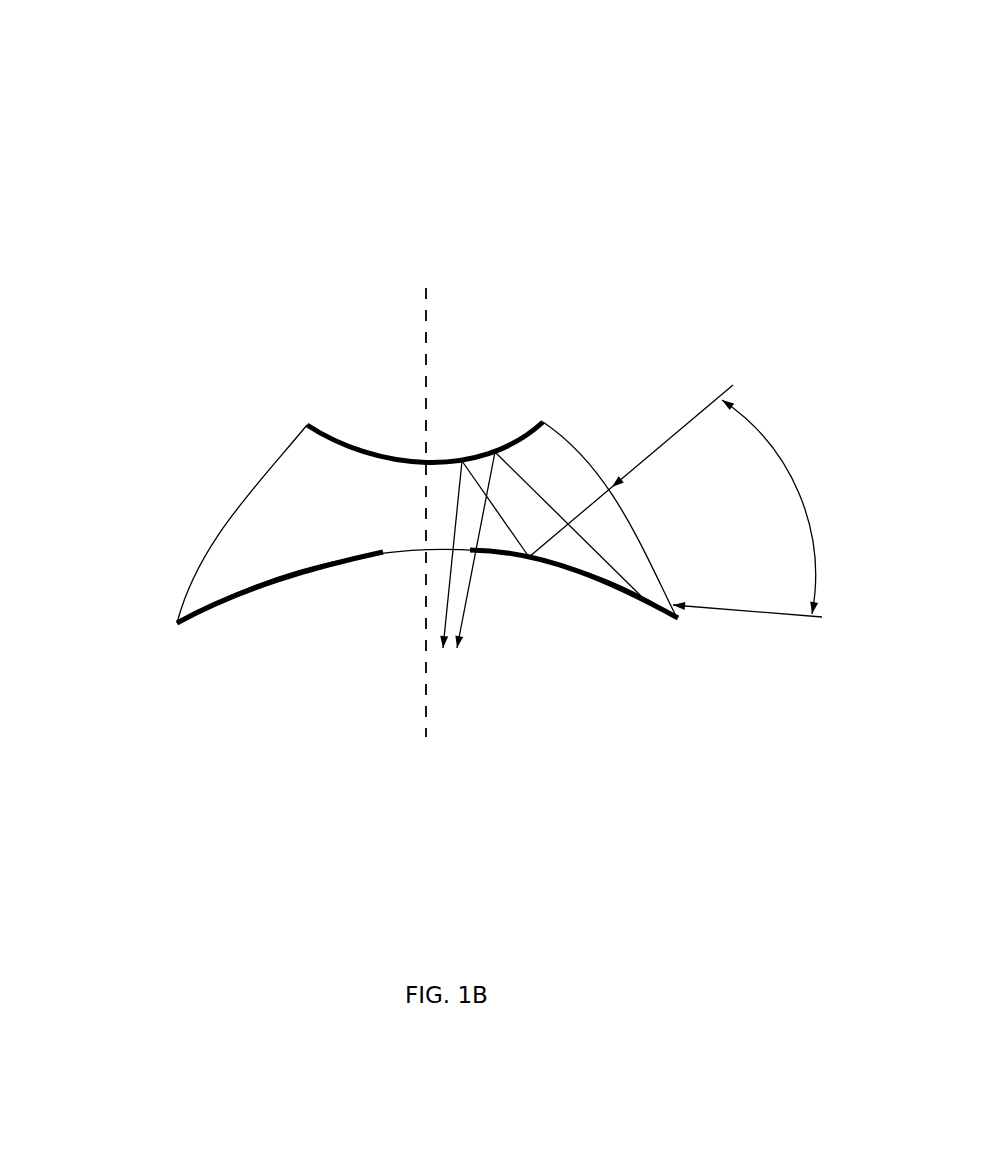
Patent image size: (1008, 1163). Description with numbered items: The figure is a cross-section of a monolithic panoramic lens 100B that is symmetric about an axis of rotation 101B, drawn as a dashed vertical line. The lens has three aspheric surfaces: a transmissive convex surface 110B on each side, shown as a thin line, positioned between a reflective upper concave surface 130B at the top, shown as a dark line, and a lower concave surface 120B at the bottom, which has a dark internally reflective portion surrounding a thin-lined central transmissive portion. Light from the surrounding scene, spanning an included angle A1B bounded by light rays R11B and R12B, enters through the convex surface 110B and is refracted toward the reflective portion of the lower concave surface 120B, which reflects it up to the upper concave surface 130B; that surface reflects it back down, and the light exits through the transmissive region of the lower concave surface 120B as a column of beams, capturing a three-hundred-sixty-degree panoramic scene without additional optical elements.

The panoramic lens 100B is at (158, 117).
The axis of rotation 101B is at (425, 330).
The convex surface 110B is at (205, 557).
The lower concave surface 120B is at (427, 677).
The upper concave surface 130B is at (367, 450).
The light ray R11B is at (680, 425).
The light ray R12B is at (735, 612).
The included angle A1B is at (771, 507).